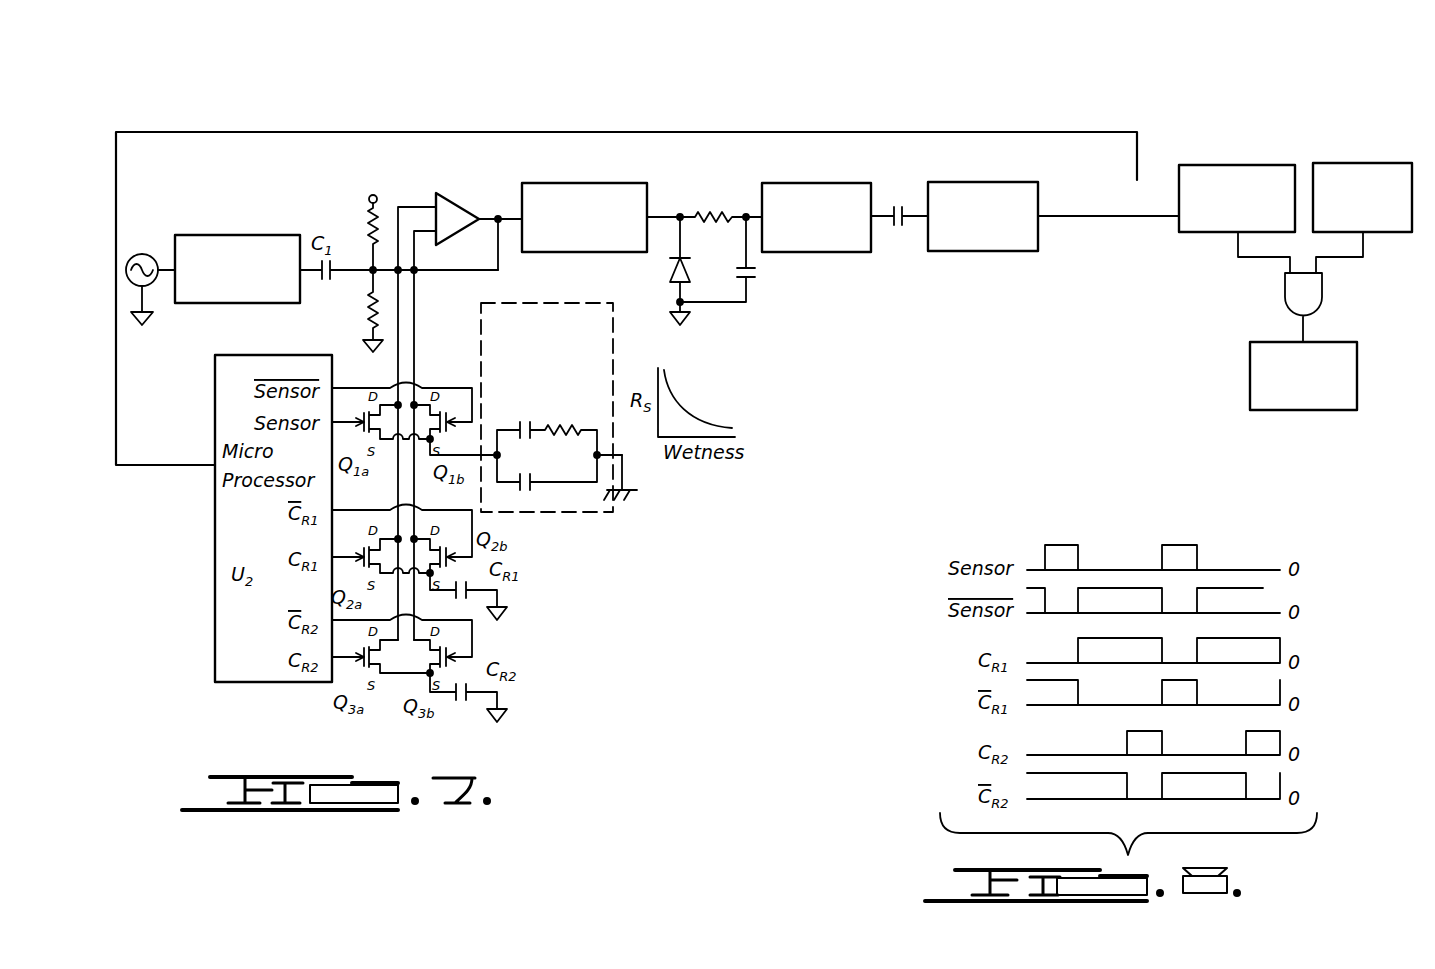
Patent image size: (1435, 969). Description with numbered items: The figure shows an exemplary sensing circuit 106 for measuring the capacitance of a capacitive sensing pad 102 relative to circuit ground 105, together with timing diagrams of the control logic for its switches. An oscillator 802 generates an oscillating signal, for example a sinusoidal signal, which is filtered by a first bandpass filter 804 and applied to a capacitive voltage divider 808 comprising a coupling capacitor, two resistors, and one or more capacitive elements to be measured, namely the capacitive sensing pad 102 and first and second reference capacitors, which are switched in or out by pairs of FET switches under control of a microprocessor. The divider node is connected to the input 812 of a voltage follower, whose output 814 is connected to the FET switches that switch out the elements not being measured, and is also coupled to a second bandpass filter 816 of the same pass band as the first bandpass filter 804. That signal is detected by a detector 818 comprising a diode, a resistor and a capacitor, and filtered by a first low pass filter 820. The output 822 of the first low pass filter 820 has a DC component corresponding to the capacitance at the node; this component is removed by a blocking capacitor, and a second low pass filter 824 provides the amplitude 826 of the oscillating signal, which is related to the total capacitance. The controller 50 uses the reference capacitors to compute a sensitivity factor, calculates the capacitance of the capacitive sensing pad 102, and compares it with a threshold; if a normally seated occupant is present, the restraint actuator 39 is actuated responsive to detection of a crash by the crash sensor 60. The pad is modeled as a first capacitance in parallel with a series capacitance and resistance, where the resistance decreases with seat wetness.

The sensing circuit 106 is at (266, 126).
The oscillator 802 is at (142, 253).
The first bandpass filter 804 is at (259, 235).
The capacitive voltage divider 808 is at (364, 190).
The input of the voltage follower U1 812 is at (415, 198).
The output of the voltage follower U1 814 is at (487, 209).
The second bandpass filter 816 is at (593, 190).
The detector 818 is at (680, 202).
The first low pass filter 820 is at (838, 245).
The output of the first low pass filter 822 is at (900, 200).
The second low pass filter 824 is at (1000, 243).
The amplitude 826 is at (1122, 218).
The controller 50 is at (1192, 170).
The crash sensor 60 is at (1394, 170).
The restraint actuator 39 is at (1255, 349).
The circuit ground 105 is at (625, 478).
The capacitive sensing pad 102 is at (540, 520).